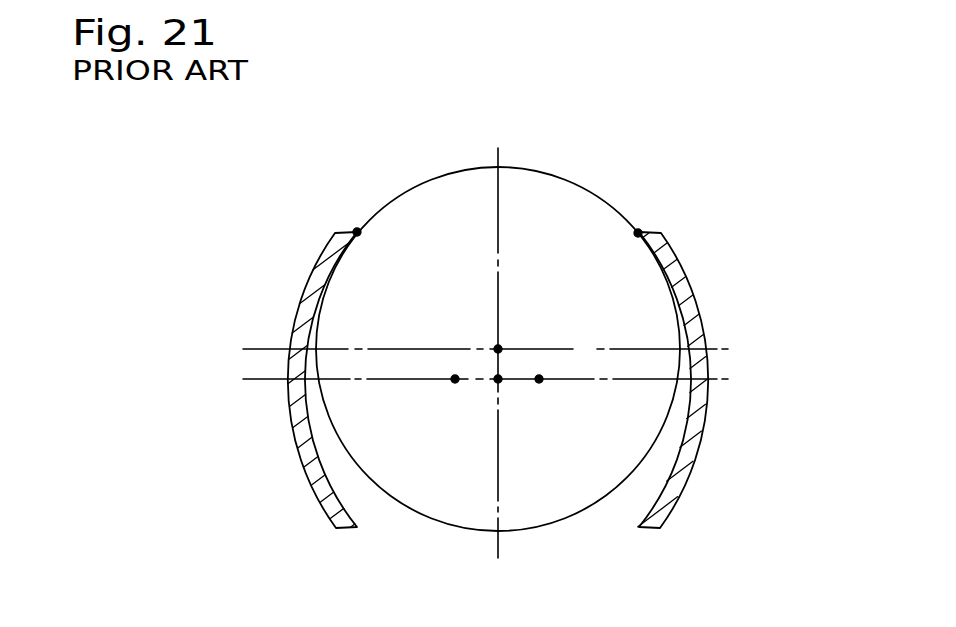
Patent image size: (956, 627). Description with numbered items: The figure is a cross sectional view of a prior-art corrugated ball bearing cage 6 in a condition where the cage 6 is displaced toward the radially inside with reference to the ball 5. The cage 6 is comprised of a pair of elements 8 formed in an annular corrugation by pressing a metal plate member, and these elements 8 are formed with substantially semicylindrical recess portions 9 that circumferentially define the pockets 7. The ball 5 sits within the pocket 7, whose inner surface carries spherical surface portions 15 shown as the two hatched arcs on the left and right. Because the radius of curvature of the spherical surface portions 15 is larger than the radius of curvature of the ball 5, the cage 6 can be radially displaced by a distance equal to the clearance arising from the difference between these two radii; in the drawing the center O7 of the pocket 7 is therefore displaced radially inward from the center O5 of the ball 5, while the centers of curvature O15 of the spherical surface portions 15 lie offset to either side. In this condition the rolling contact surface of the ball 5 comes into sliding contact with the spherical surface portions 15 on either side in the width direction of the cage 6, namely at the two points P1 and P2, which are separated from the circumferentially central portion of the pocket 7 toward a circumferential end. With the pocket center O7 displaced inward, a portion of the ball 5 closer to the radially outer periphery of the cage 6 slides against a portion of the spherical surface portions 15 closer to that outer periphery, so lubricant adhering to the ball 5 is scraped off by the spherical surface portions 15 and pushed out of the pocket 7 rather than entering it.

The ball 5 is at (437, 505).
The cage 6 is at (728, 364).
The pocket 7 is at (675, 296).
The element 8 is at (297, 403).
The semicylindrical recess portion 9 is at (313, 301).
The spherical surface portion 15 is at (315, 476).
The contact point P1 is at (638, 233).
The contact point P2 is at (357, 232).
The center of the ball O5 is at (498, 349).
The center of the pocket O7 is at (498, 379).
The center of curvature of the spherical surface portion O15 is at (605, 320).